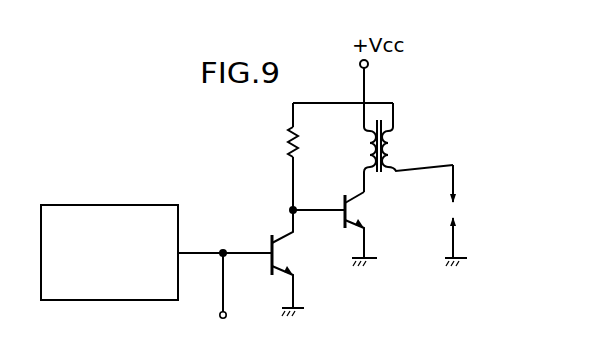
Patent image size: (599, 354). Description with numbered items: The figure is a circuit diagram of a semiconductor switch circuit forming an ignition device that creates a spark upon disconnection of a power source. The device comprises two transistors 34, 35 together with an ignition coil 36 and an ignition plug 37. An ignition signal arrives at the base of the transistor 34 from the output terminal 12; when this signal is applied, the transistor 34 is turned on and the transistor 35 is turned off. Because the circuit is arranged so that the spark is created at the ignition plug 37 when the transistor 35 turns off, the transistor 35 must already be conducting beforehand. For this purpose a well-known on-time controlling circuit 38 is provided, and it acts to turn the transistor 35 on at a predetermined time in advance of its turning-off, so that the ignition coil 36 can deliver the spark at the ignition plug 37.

The output terminal 12 is at (227, 316).
The transistor 34 is at (283, 257).
The transistor 35 is at (355, 212).
The ignition coil 36 is at (378, 167).
The ignition plug 37 is at (457, 210).
The on-time controlling circuit 38 is at (158, 300).